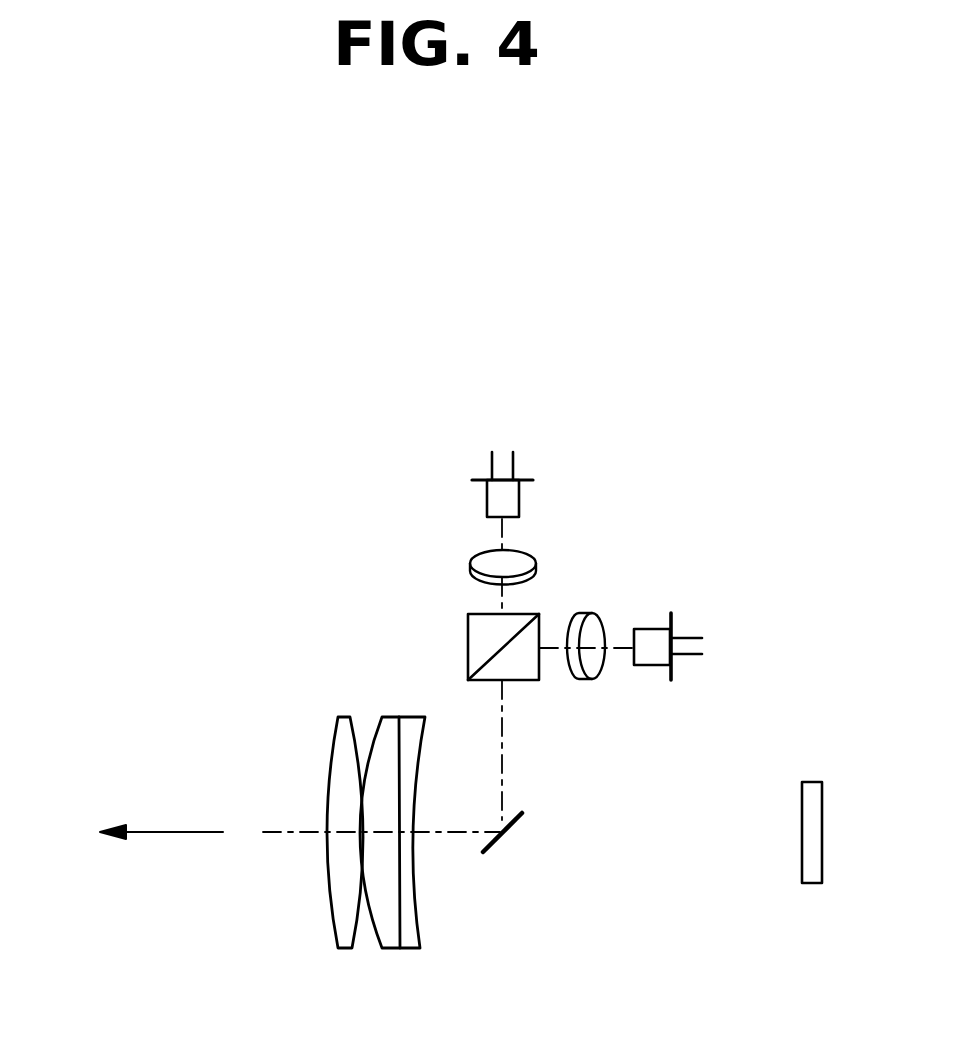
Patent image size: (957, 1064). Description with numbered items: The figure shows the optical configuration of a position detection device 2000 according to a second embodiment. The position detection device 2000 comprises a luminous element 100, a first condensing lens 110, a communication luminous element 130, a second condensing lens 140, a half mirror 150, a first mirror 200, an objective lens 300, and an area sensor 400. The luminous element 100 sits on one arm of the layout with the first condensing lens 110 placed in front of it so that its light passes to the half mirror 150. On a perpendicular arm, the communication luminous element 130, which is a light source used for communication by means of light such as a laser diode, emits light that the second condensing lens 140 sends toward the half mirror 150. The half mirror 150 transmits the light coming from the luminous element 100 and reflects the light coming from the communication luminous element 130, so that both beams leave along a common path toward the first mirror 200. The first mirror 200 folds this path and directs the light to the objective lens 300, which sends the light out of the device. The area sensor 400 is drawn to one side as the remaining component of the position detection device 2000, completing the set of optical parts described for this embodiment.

The luminous element 100 is at (525, 480).
The first condensing lens 110 is at (537, 571).
The half mirror 150 is at (468, 618).
The second condensing lens 140 is at (600, 675).
The communication luminous element 130 is at (677, 625).
The first mirror 200 is at (517, 825).
The objective lens 300 is at (407, 715).
The area sensor 400 is at (812, 780).
The position detection device 2000 is at (285, 721).